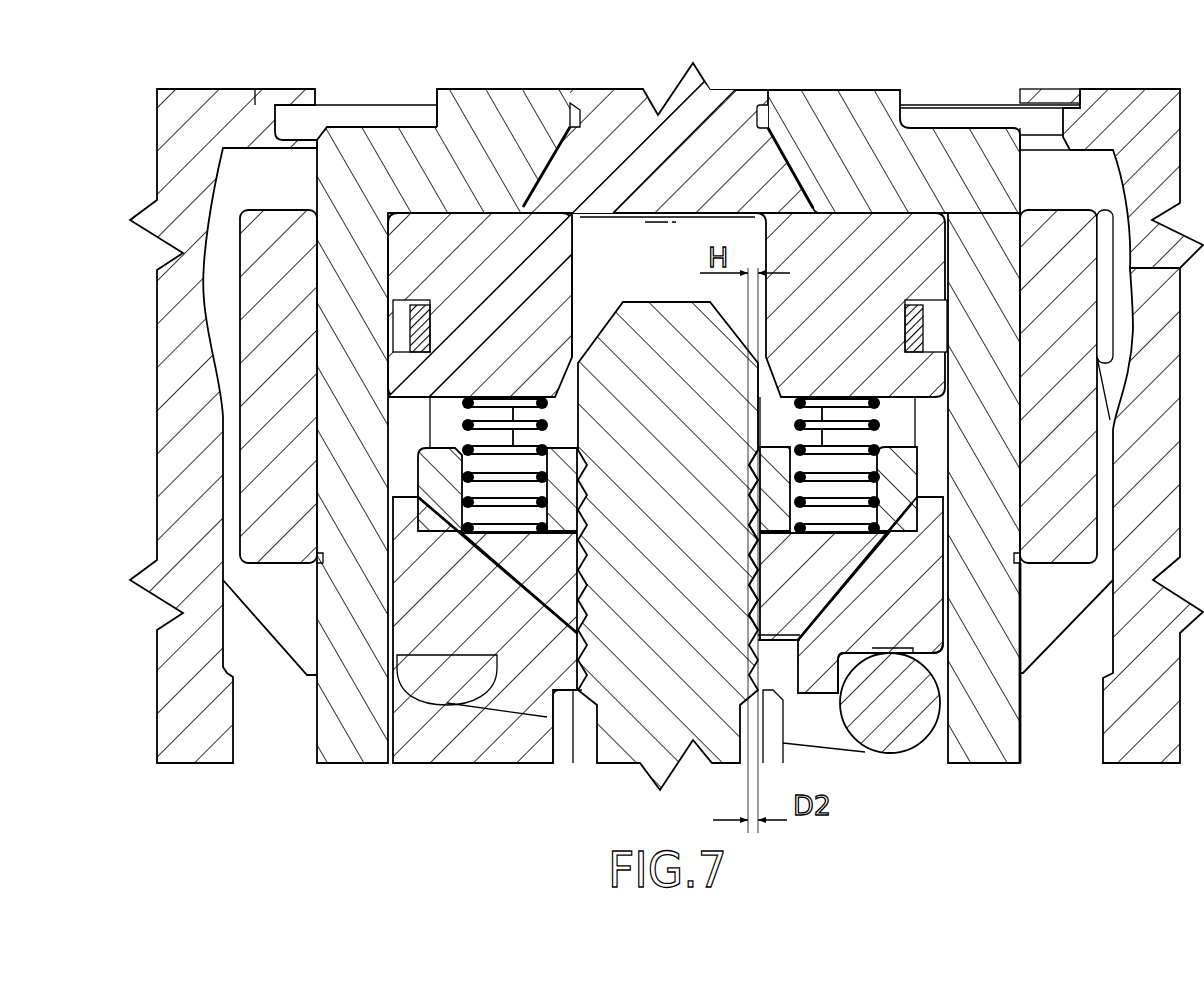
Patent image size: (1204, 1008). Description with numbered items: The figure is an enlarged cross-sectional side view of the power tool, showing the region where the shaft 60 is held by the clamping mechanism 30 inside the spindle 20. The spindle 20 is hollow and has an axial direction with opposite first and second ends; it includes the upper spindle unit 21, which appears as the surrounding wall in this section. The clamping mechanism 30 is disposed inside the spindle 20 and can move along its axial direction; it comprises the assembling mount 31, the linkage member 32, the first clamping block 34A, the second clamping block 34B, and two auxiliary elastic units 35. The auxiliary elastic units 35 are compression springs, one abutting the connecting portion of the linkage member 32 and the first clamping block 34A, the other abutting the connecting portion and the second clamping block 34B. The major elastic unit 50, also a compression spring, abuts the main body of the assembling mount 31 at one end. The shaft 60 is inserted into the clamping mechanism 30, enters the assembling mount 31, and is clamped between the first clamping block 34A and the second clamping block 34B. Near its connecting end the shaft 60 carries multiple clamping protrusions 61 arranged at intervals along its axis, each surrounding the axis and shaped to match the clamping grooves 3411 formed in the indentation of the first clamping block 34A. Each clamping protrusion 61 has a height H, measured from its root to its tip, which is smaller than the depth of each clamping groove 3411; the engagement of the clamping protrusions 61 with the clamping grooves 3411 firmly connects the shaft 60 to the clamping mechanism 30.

The spindle 20 is at (933, 158).
The upper spindle unit 21 is at (988, 320).
The clamping mechanism 30 is at (936, 665).
The assembling mount 31 is at (914, 589).
The linkage member 32 is at (557, 289).
The first clamping block 34A is at (912, 473).
The second clamping block 34B is at (548, 622).
The auxiliary elastic units 35 is at (497, 405).
The major elastic unit 50 is at (883, 730).
The shaft 60 is at (634, 734).
The clamping protrusions 61 is at (748, 523).
The clamping grooves 3411 is at (748, 577).